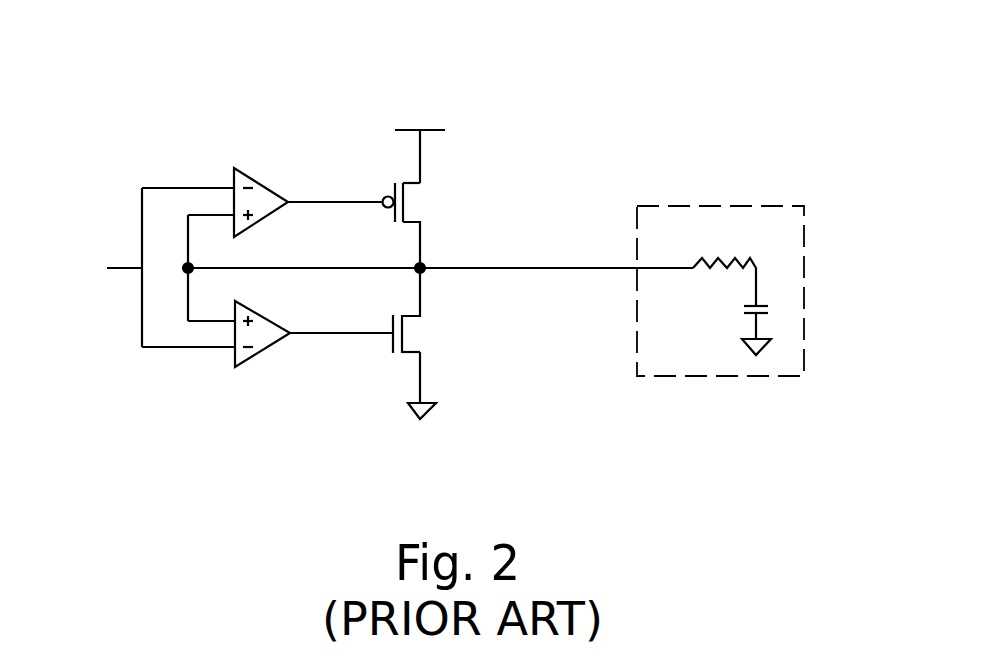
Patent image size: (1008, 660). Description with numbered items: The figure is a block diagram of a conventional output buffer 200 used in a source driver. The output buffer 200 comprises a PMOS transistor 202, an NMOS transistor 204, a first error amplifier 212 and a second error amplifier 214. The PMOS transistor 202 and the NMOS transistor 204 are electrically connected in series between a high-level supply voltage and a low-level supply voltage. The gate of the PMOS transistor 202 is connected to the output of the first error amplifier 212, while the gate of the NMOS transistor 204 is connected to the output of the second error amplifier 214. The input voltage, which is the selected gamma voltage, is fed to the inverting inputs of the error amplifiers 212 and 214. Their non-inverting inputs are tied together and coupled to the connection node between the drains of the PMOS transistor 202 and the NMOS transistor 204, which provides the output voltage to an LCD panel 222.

The output buffer 200 is at (78, 132).
The PMOS transistor 202 is at (418, 200).
The NMOS transistor 204 is at (418, 333).
The first error amplifier 212 is at (267, 195).
The second error amplifier 214 is at (267, 338).
The LCD panel 222 is at (790, 230).